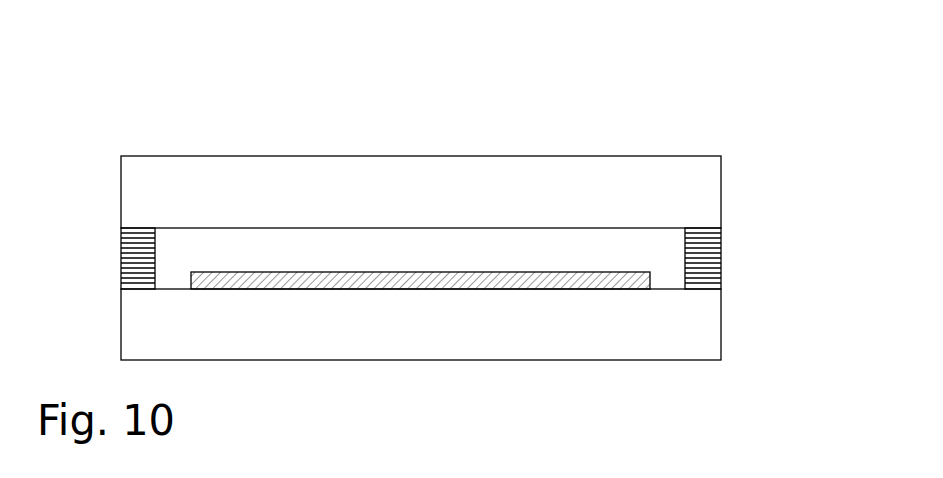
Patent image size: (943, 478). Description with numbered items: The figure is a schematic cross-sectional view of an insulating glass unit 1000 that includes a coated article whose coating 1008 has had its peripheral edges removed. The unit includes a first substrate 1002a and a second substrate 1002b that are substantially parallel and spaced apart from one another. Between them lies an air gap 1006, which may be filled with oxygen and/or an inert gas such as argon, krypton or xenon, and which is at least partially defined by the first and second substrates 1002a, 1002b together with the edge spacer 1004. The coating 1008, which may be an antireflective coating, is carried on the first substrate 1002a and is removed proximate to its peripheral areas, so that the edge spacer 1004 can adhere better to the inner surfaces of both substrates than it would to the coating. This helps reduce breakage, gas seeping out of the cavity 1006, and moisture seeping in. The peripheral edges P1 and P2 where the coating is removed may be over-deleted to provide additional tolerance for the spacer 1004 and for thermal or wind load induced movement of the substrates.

The insulating glass unit 1000 is at (359, 110).
The first substrate 1002a is at (721, 323).
The second substrate 1002b is at (721, 193).
The edge spacer 1004 is at (121, 257).
The air gap 1006 is at (441, 246).
The coating 1008 is at (650, 280).
The peripheral edge P1 is at (173, 278).
The peripheral edge P2 is at (668, 278).